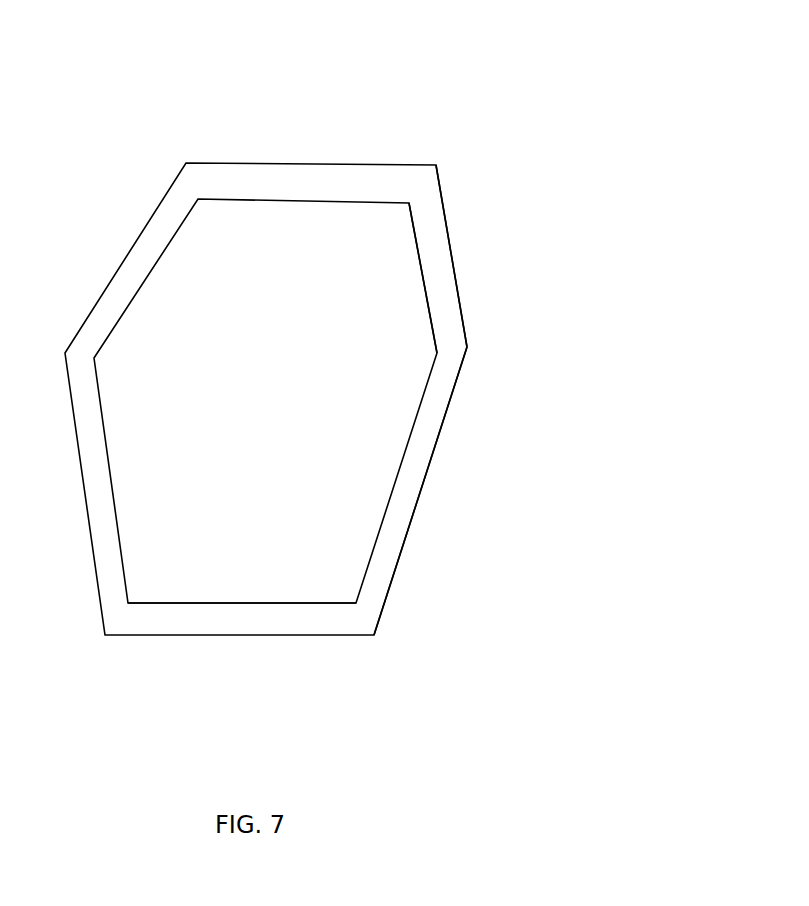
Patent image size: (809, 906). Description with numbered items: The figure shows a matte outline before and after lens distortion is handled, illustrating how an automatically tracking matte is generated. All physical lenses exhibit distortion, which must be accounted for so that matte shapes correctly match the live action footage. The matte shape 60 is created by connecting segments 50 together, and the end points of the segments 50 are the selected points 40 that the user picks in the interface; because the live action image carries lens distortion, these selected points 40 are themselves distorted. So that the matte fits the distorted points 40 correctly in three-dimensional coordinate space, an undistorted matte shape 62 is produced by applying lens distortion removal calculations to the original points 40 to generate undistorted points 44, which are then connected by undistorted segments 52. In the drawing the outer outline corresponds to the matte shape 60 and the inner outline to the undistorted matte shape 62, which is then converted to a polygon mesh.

The matte shape 60 is at (332, 180).
The undistorted matte shape 62 is at (377, 258).
The undistorted segments 52 is at (422, 258).
The selected points 40 is at (467, 348).
The segments 50 is at (450, 402).
The undistorted points 44 is at (128, 603).